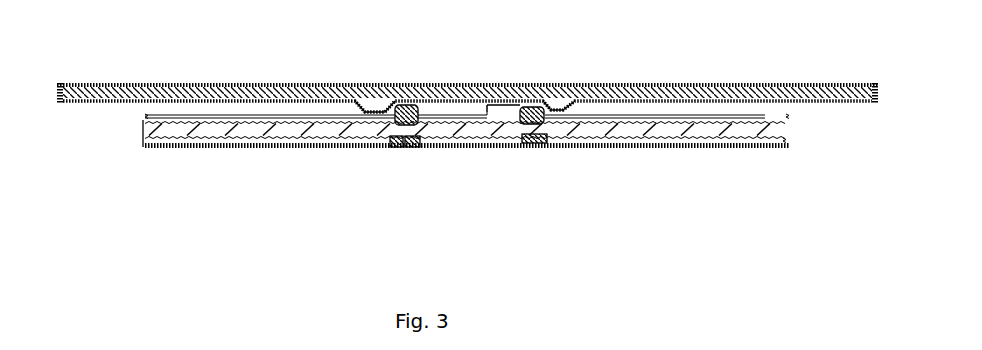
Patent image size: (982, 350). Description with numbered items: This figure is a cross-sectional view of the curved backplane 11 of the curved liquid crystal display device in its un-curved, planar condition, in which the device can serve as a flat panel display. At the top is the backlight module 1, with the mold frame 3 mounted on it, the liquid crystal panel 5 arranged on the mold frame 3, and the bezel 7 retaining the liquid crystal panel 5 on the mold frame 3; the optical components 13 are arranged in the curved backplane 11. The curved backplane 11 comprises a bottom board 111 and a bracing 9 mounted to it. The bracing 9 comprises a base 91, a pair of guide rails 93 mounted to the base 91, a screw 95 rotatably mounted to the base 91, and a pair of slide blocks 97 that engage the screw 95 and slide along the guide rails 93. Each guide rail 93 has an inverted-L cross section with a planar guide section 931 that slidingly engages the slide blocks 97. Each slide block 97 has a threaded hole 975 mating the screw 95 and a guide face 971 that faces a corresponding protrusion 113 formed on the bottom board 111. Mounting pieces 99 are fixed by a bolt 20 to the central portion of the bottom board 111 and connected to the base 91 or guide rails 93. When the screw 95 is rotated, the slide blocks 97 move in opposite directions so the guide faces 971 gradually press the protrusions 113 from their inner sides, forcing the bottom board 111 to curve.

The backlight module 1 is at (63, 98).
The mold frame 3 is at (64, 87).
The liquid crystal panel 5 is at (122, 84).
The bezel 7 is at (63, 85).
The bracing 9 is at (148, 140).
The curved backplane 11 is at (873, 101).
The optical components 13 is at (305, 100).
The bolt 20 is at (468, 103).
The base 91 is at (786, 141).
The guide rails 93 is at (183, 120).
The screw 95 is at (686, 128).
The slide blocks 97 is at (398, 136).
The mounting pieces 99 is at (473, 110).
The bottom board 111 is at (423, 103).
The protrusions 113 is at (553, 112).
The guide section 931 is at (205, 118).
The guide face 971 is at (395, 112).
The threaded hole 975 is at (399, 118).